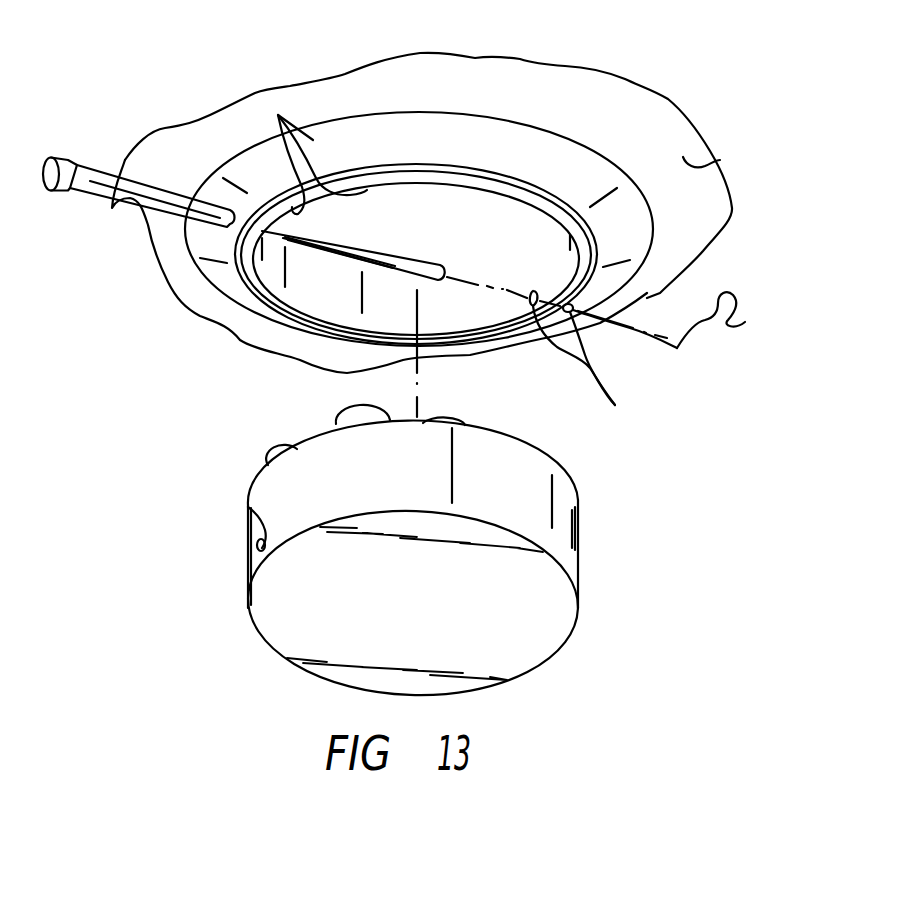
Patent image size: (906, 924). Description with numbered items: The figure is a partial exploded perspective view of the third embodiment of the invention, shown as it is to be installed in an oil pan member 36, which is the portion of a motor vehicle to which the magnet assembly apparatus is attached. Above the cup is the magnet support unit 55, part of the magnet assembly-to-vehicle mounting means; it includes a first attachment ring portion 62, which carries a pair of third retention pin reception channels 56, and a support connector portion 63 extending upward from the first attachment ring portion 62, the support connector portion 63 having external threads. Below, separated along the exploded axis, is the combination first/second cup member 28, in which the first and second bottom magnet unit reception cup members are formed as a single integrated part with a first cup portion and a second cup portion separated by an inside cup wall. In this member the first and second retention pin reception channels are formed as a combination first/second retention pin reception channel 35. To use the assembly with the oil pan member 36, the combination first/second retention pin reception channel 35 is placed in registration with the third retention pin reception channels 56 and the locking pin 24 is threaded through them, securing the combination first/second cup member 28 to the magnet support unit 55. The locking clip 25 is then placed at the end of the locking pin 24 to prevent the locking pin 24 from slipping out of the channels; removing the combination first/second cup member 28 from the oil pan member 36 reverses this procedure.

The locking pin 24 is at (112, 210).
The locking clip 25 is at (745, 322).
The combination first/second cup member 28 is at (578, 614).
The combination first/second retention pin reception channel 35 is at (248, 507).
The oil pan member 36 is at (718, 160).
The magnet support unit 55 is at (278, 115).
The third retention pin reception channels 56 is at (615, 405).
The first attachment ring portion 62 is at (577, 165).
The support connector portion 63 is at (500, 263).